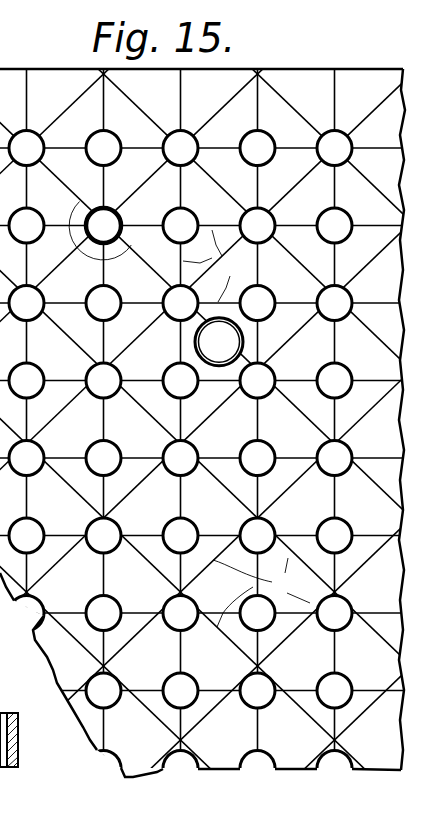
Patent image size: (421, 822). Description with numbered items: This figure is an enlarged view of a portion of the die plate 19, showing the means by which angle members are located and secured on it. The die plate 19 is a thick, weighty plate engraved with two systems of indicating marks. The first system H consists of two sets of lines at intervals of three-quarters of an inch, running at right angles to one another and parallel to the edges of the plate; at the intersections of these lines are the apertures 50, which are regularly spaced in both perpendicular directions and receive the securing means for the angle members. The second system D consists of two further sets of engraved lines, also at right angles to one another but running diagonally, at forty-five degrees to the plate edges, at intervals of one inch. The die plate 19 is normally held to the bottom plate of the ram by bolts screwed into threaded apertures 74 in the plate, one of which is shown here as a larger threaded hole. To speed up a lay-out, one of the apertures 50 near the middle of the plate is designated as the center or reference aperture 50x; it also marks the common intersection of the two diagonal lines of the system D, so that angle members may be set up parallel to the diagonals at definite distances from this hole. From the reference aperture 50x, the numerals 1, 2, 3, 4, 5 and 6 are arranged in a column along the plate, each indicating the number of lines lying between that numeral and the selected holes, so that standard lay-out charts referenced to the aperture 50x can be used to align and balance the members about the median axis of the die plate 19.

The die plate 19 is at (347, 69).
The apertures 50 is at (270, 161).
The center or reference aperture 50x is at (107, 218).
The threaded apertures 74 is at (233, 340).
The first system of indicating marks H is at (251, 243).
The second system of lines D is at (189, 415).
The numeral 1 is at (180, 360).
The numeral 2 is at (180, 438).
The numeral 3 is at (180, 515).
The numeral 4 is at (180, 593).
The numeral 5 is at (219, 670).
The numeral 6 is at (219, 748).